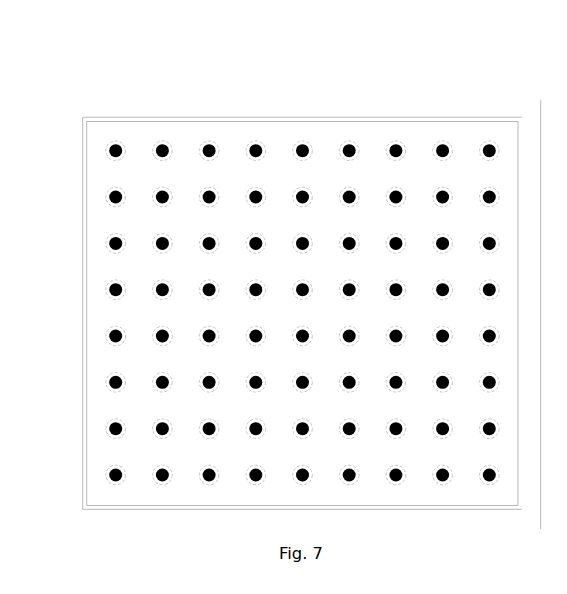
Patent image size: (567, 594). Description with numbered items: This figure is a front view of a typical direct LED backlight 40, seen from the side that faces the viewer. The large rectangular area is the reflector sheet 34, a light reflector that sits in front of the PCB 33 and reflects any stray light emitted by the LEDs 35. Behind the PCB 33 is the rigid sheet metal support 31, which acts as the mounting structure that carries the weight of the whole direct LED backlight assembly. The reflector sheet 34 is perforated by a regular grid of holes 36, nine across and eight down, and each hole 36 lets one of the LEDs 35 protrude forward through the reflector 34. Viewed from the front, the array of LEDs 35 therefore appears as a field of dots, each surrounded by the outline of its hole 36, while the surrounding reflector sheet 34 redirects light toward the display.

The array assembly 40 is at (216, 50).
The sheet metal support 31 is at (60, 167).
The PCB 33 is at (79, 272).
The reflector sheet 34 is at (96, 403).
The LEDs 35 is at (256, 139).
The holes 36 is at (116, 136).